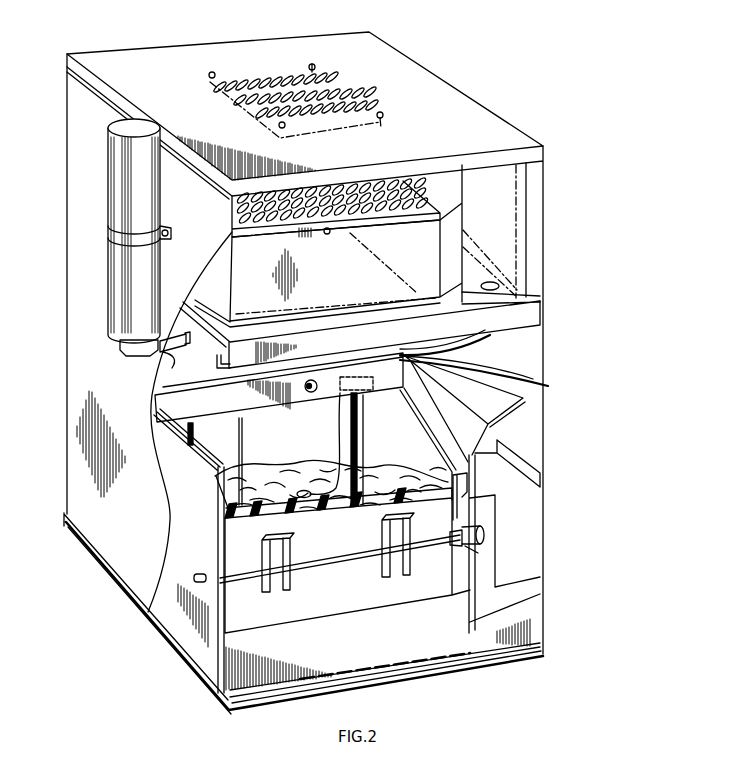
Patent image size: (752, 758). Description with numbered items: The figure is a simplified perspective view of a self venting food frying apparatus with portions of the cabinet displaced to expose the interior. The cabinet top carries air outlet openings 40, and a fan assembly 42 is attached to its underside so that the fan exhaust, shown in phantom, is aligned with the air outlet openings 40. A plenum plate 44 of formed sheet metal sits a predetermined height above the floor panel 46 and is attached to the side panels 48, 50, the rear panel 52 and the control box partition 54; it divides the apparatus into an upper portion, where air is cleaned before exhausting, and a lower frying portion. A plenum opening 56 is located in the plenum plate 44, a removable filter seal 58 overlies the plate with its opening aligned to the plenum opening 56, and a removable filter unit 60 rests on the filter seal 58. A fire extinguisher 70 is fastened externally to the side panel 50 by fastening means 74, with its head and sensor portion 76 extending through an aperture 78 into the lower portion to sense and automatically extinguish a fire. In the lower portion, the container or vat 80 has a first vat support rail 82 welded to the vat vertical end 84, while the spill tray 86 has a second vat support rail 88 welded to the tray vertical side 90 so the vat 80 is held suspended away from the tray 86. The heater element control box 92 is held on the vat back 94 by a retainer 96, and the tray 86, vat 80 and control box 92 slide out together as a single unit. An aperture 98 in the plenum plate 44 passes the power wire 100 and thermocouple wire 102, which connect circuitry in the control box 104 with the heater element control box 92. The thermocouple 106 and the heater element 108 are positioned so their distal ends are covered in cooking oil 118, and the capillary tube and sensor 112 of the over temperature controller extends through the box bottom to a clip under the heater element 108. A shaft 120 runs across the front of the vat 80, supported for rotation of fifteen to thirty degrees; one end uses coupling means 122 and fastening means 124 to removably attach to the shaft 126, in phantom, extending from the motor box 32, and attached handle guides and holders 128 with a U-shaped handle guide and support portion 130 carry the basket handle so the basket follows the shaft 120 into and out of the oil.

The air outlet openings 40 is at (238, 80).
The fan assembly 42 is at (362, 123).
The control box partition 54 is at (343, 206).
The control box 104 is at (510, 209).
The removable filter unit 60 is at (328, 246).
The aperture 98 is at (500, 283).
The plenum opening 56 is at (352, 298).
The plenum plate 44 is at (525, 316).
The filter seal 58 is at (384, 334).
The rear panel 52 is at (213, 352).
The thermocouple wire 102 is at (490, 335).
The power wire 100 is at (493, 377).
The spill tray 86 is at (466, 367).
The side panel 48 is at (465, 409).
The second vat support rail 88 is at (468, 506).
The motor box 32 is at (515, 575).
The fastening means 124 is at (483, 521).
The shaft 126 is at (492, 531).
The coupling means 122 is at (465, 545).
The first vat support rail 82 is at (455, 507).
The container or vat 80 is at (343, 554).
The handle guides and holders 128 is at (345, 538).
The handle guide and support portion 130 is at (275, 580).
The shaft 120 is at (251, 580).
The cooking oil 118 is at (366, 477).
The vat vertical end 84 is at (409, 446).
The heater element 108 is at (368, 414).
The capillary tube and sensor 112 is at (336, 440).
The thermocouple 106 is at (243, 430).
The retainer 96 is at (312, 393).
The heater element control box 92 is at (279, 387).
The vat back 94 is at (190, 551).
The tray vertical side 90 is at (437, 590).
The floor panel 46 is at (222, 688).
The side panel 50 is at (96, 284).
The fire extinguisher 70 is at (120, 275).
The fastening means 74 is at (108, 231).
The head and sensor portion 76 is at (160, 366).
The aperture 78 is at (160, 350).